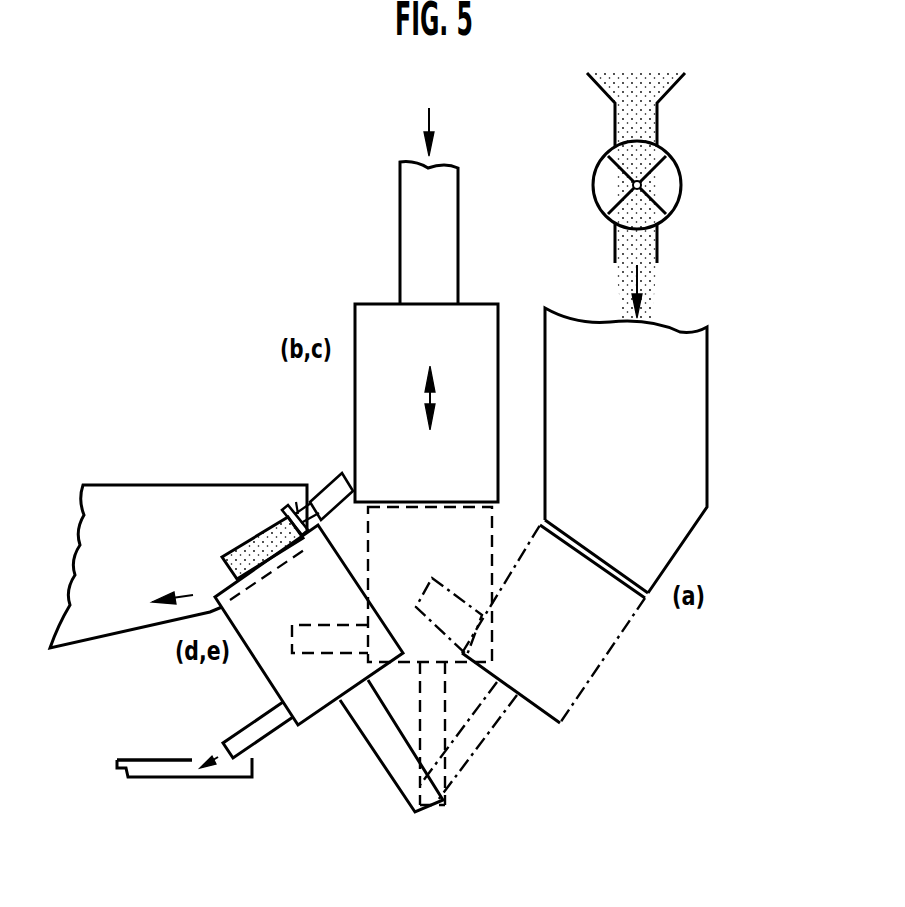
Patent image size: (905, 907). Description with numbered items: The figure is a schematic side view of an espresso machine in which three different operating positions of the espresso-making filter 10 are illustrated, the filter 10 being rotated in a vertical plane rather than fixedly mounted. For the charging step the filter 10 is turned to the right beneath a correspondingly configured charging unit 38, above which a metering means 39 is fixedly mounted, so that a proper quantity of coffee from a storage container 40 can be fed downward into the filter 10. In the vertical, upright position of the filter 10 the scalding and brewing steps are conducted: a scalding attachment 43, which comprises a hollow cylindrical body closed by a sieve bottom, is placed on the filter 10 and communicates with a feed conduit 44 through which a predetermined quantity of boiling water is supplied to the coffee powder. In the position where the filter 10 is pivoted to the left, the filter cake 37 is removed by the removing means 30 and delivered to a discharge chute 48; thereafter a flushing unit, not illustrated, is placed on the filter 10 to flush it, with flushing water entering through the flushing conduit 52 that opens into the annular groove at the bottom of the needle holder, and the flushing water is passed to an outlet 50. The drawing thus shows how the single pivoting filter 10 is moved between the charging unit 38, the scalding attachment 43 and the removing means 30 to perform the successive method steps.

The espresso-making filter 10 is at (615, 660).
The removing means 30 is at (294, 482).
The filter cake 37 is at (267, 530).
The charging unit 38 is at (682, 457).
The metering means 39 is at (681, 177).
The storage container 40 is at (657, 87).
The scalding attachment 43 is at (375, 332).
The feed conduit 44 is at (417, 215).
The discharge chute 48 is at (132, 500).
The outlet 50 is at (182, 770).
The flushing conduit 52 is at (267, 725).